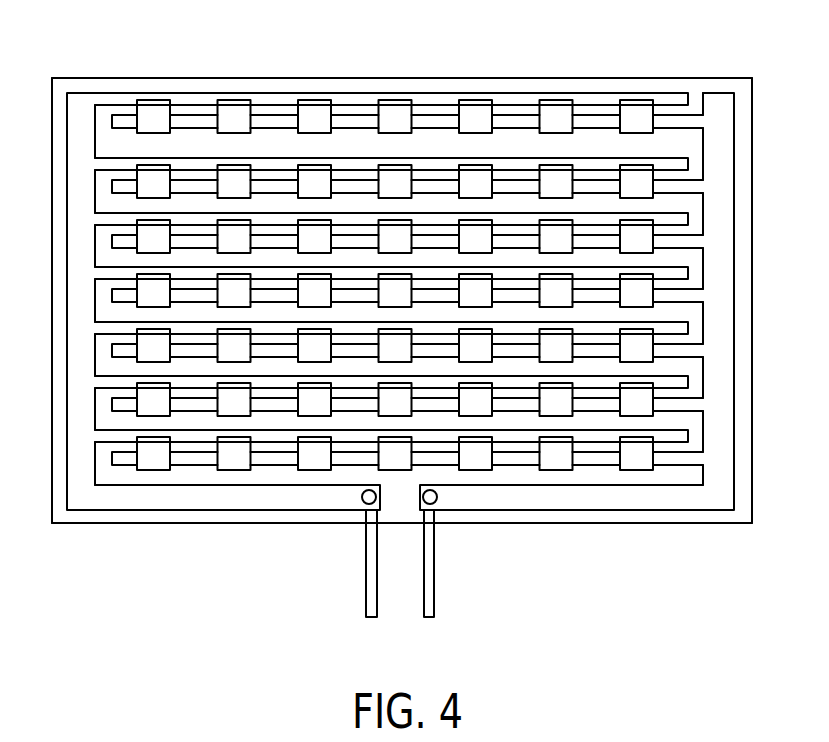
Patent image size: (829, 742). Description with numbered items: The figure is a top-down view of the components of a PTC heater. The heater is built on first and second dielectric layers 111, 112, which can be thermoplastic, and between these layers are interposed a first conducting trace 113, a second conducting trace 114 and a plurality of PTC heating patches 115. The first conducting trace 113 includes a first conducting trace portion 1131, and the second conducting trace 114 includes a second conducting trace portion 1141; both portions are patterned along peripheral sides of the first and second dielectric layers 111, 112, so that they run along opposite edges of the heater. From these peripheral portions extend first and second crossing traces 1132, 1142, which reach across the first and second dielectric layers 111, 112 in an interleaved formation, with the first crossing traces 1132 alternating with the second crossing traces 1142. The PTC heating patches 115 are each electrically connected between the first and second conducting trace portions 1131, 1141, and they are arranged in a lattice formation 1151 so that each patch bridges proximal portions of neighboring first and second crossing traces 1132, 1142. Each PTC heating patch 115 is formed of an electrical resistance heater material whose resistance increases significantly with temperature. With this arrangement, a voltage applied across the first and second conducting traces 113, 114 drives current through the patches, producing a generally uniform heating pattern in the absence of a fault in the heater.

The first dielectric layer 111 is at (155, 77).
The second dielectric layer 112 is at (402, 266).
The first conducting trace 113 is at (366, 588).
The second conducting trace 114 is at (434, 583).
The PTC heating patch 115 is at (390, 101).
The first conducting trace portion 1131 is at (80, 110).
The first crossing trace 1132 is at (178, 342).
The second conducting trace portion 1141 is at (718, 112).
The second crossing trace 1142 is at (602, 347).
The lattice formation 1151 is at (300, 428).